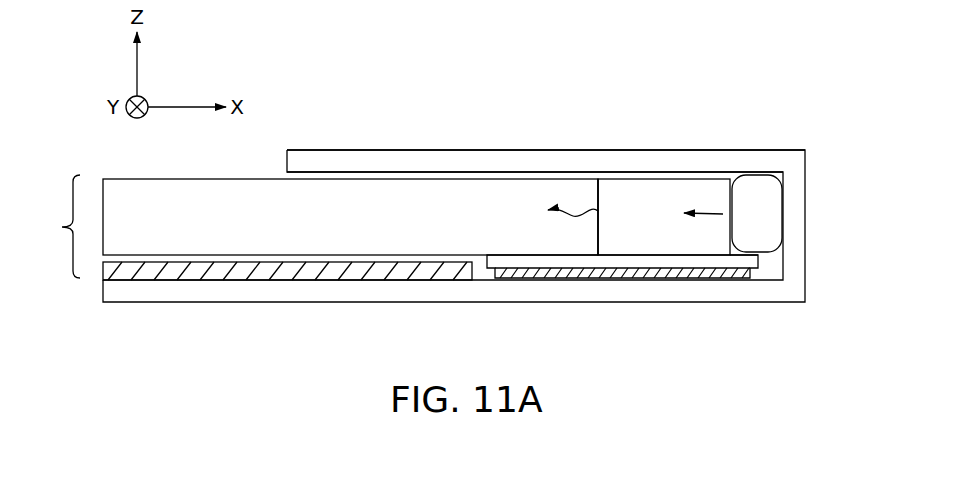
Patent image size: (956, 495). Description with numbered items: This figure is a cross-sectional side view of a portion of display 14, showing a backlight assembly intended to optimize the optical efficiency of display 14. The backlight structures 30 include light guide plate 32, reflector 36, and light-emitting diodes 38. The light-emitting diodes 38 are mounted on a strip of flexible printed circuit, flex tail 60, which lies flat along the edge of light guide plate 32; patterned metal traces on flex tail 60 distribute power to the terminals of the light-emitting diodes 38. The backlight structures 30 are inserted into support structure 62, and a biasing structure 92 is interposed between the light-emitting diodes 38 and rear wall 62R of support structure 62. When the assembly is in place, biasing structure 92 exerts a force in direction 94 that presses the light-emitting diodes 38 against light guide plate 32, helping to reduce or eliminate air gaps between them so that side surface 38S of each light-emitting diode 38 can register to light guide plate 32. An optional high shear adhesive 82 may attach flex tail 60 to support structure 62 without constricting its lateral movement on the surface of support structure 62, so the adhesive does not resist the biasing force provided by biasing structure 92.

The display 14 is at (340, 72).
The backlight structures 30 is at (56, 226).
The light guide plate 32 is at (423, 197).
The reflector 36 is at (227, 273).
The light-emitting diodes 38 is at (628, 187).
The side surface 38S is at (594, 232).
The flex tail 60 is at (747, 263).
The support structure 62 is at (730, 162).
The rear wall 62R is at (797, 207).
The high shear adhesive 82 is at (513, 278).
The biasing structure 92 is at (758, 187).
The direction 94 is at (707, 215).